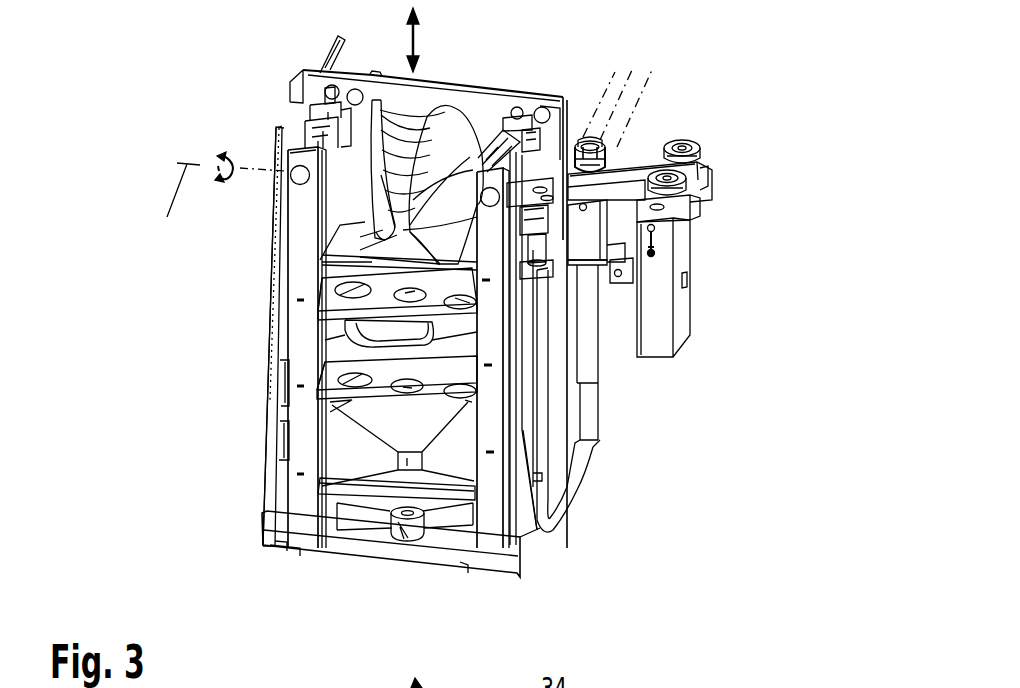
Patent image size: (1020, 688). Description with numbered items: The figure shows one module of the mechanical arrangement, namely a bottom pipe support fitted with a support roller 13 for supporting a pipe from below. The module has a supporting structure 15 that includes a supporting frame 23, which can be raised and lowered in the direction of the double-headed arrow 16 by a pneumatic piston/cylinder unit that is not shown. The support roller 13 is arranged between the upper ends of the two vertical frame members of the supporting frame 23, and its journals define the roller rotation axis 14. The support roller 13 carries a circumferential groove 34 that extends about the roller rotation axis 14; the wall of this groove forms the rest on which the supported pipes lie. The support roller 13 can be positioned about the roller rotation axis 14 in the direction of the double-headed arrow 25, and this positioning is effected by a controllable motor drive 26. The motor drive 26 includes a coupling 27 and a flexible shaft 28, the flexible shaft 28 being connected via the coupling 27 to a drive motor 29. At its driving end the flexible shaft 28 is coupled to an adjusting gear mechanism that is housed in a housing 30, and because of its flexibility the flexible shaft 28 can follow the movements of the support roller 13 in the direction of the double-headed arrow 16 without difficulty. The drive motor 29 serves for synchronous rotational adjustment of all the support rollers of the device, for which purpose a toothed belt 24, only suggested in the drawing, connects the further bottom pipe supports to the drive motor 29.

The support roller 13 is at (482, 115).
The roller rotation axis 14 is at (214, 206).
The supporting structure 15 is at (268, 322).
The double-headed arrow 16 is at (420, 44).
The supporting frame 23 is at (298, 390).
The toothed belt 24 is at (652, 94).
The double-headed arrow 25 is at (227, 150).
The motor drive 26 is at (708, 265).
The coupling 27 is at (598, 247).
The flexible shaft 28 is at (582, 460).
The drive motor 29 is at (665, 343).
The housing 30 is at (555, 190).
The circumferential groove 34 is at (380, 188).